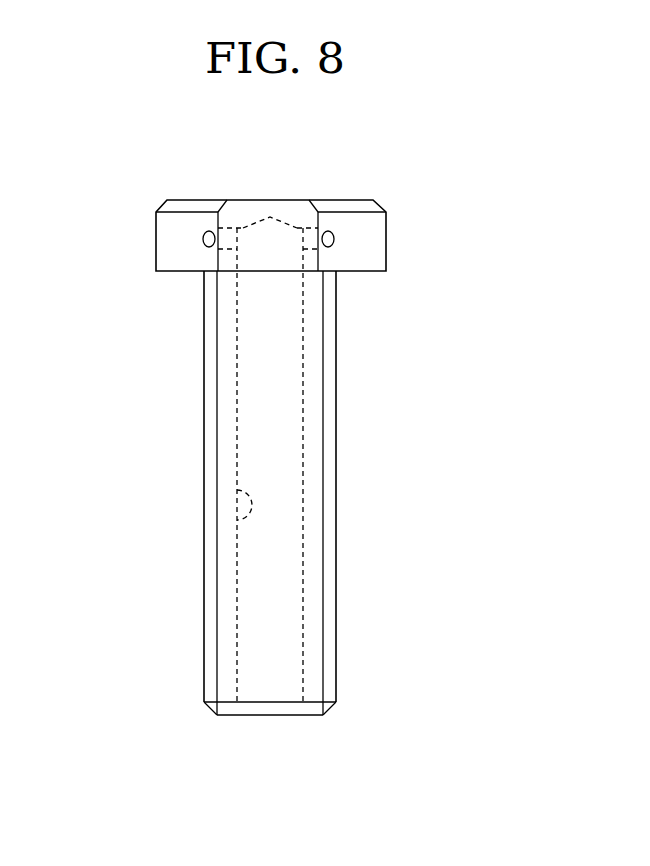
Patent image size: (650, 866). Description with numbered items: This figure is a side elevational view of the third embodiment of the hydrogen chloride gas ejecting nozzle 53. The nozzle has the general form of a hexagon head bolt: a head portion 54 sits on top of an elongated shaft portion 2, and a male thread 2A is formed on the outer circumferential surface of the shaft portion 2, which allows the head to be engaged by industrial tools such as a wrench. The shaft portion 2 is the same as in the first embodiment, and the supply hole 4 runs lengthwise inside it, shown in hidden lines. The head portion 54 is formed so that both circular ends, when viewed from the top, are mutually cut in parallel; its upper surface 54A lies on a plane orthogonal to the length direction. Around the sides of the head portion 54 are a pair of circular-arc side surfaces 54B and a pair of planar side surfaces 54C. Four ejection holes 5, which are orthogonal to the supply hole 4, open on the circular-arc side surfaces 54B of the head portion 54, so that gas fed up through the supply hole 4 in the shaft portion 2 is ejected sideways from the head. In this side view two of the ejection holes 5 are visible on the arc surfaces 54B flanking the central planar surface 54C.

The shaft portion 2 is at (305, 493).
The male thread 2A is at (337, 567).
The supply hole 4 is at (242, 518).
The ejection hole 5 is at (203, 243).
The hydrogen chloride gas ejecting nozzle 53 is at (281, 409).
The head portion 54 is at (272, 403).
The upper surface 54A is at (195, 203).
The circular-arc side surface 54B is at (177, 235).
The planar side surface 54C is at (268, 252).